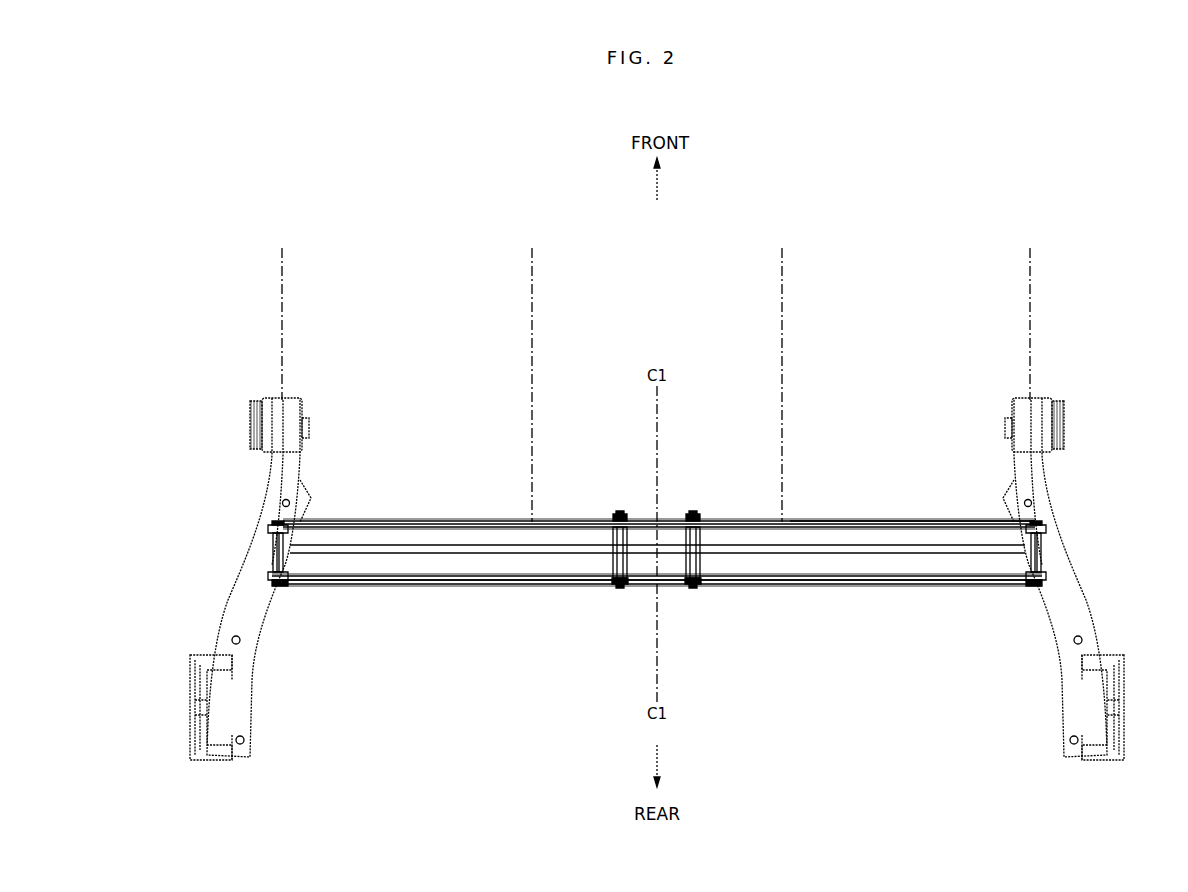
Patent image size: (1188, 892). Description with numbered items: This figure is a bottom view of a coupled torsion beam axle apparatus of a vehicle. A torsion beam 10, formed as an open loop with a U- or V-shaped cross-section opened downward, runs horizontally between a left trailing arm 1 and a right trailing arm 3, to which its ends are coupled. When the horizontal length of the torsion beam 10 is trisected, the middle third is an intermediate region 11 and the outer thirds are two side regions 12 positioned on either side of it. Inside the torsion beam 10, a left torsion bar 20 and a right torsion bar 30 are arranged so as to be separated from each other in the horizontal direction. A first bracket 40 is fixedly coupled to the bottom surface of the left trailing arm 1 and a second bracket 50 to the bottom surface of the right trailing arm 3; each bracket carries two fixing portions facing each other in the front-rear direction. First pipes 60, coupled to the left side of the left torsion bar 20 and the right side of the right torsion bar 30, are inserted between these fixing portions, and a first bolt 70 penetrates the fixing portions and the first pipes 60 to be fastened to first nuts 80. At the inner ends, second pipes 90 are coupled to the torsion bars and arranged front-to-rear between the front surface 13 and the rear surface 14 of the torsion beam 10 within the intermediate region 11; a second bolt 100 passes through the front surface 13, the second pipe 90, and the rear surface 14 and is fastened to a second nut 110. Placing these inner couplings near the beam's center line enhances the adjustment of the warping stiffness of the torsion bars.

The left trailing arm 1 is at (245, 706).
The right trailing arm 3 is at (1069, 706).
The torsion beam 10 is at (414, 518).
The intermediate region 11 is at (532, 261).
The side regions 12 is at (1030, 261).
The front surface 13 is at (807, 520).
The rear surface 14 is at (805, 585).
The left torsion bar 20 is at (425, 555).
The right torsion bar 30 is at (862, 555).
The first bracket 40 is at (268, 529).
The second bracket 50 is at (1046, 529).
The first pipes 60 is at (273, 552).
The first bolt 70 is at (276, 521).
The first nuts 80 is at (283, 588).
The second pipes 90 is at (613, 560).
The second bolt 100 is at (621, 512).
The second nut 110 is at (620, 588).